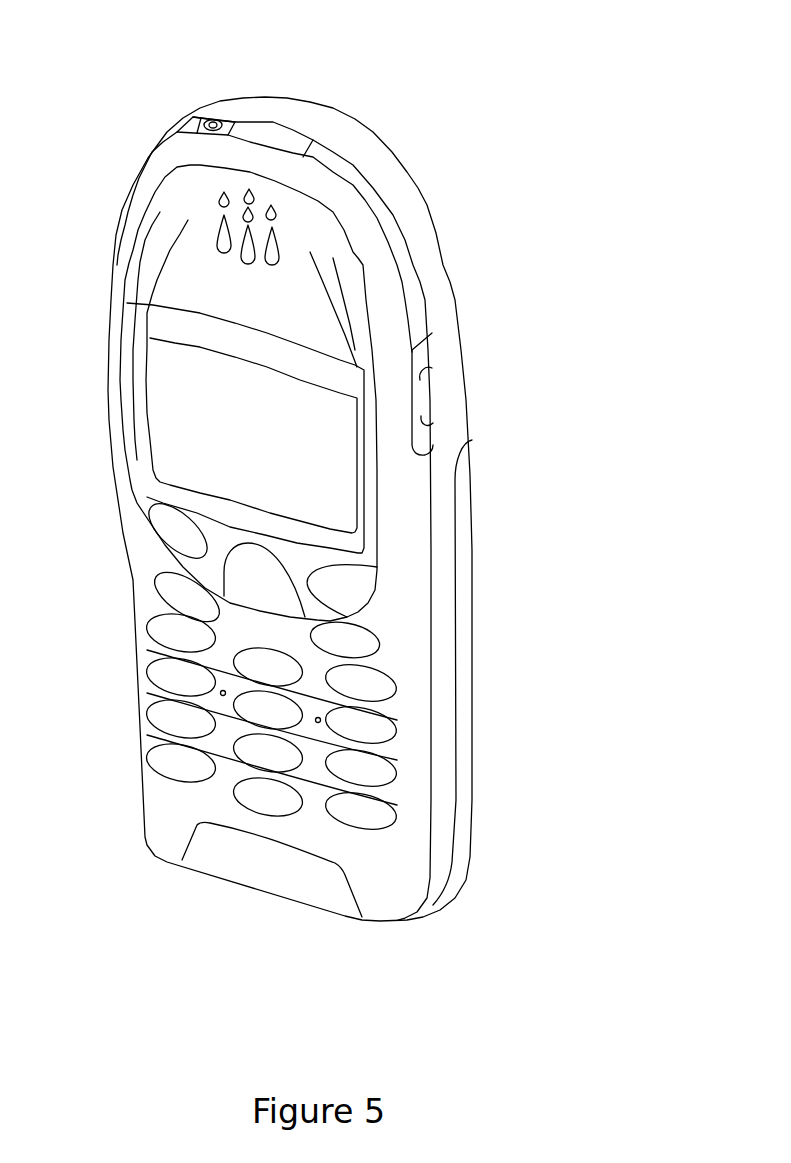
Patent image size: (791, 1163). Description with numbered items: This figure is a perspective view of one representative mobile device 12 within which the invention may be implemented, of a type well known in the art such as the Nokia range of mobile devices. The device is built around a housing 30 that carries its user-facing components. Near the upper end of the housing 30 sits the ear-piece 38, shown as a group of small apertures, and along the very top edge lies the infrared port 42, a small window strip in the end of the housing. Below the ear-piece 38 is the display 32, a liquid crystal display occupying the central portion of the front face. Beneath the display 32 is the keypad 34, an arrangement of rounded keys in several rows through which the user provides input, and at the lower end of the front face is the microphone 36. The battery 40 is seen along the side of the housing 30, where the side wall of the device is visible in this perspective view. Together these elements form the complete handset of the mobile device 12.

The mobile device 12 is at (403, 110).
The housing 30 is at (437, 265).
The display 32 is at (333, 480).
The keypad 34 is at (360, 820).
The microphone 36 is at (212, 860).
The ear-piece 38 is at (239, 220).
The battery 40 is at (463, 797).
The infrared port 42 is at (272, 135).